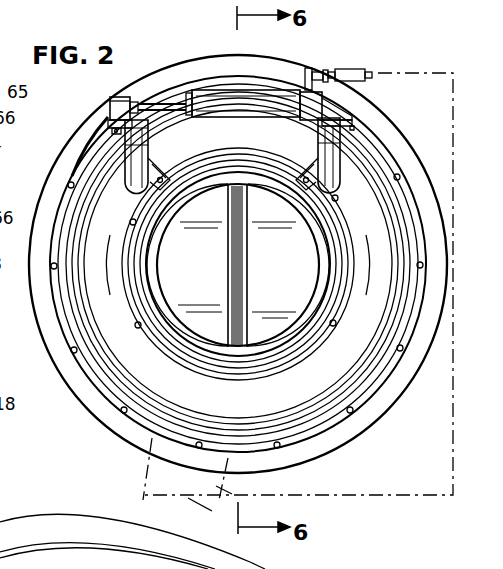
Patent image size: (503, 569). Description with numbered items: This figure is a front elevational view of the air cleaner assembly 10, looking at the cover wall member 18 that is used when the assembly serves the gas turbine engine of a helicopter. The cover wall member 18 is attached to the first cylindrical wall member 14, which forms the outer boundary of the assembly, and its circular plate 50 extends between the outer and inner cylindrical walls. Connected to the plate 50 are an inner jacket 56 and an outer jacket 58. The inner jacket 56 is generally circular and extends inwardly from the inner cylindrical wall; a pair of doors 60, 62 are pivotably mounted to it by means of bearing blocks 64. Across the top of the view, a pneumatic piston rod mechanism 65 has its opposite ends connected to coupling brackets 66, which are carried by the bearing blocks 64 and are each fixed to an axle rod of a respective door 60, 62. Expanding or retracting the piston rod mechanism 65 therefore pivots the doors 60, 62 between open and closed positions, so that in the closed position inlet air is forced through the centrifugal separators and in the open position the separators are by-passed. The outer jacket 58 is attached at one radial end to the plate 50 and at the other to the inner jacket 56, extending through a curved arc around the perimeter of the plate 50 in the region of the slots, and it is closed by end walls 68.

The air cleaner assembly 10 is at (82, 441).
The first cylindrical wall member 14 is at (80, 162).
The cover wall member 18 is at (145, 295).
The circular plate 50 is at (92, 153).
The inner jacket 56 is at (219, 125).
The outer jacket 58 is at (100, 392).
The door 60 is at (187, 265).
The door 62 is at (288, 265).
The bearing block 64 is at (150, 162).
The pneumatic piston rod mechanism 65 is at (246, 88).
The coupling bracket 66 is at (113, 126).
The end wall 68 is at (62, 173).